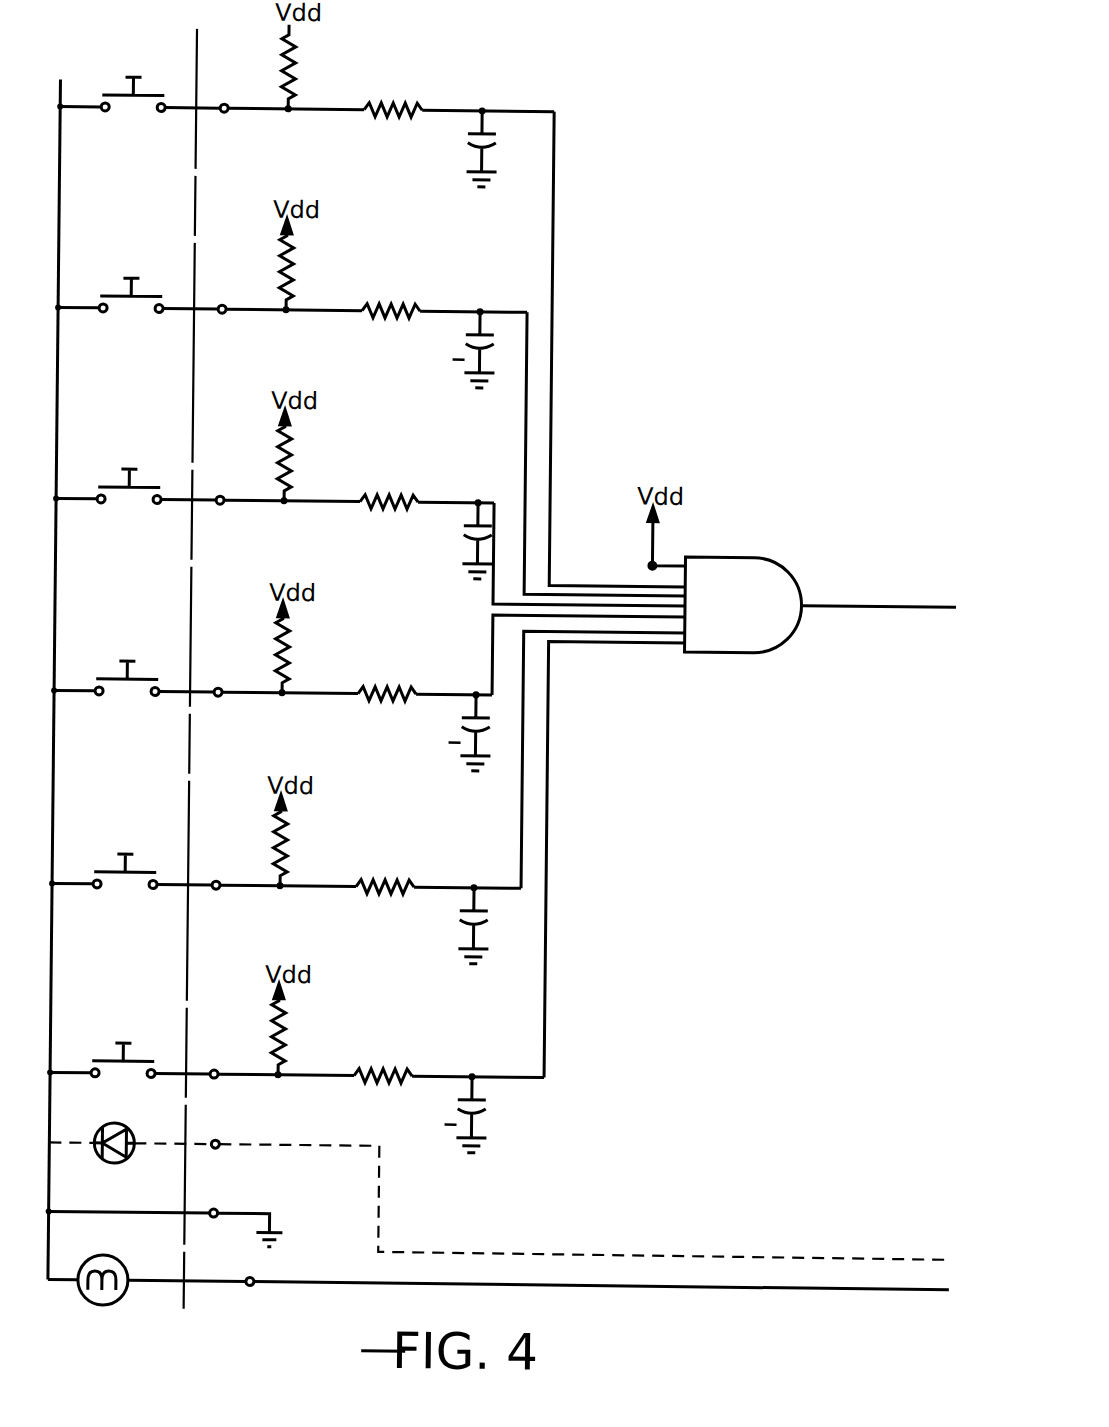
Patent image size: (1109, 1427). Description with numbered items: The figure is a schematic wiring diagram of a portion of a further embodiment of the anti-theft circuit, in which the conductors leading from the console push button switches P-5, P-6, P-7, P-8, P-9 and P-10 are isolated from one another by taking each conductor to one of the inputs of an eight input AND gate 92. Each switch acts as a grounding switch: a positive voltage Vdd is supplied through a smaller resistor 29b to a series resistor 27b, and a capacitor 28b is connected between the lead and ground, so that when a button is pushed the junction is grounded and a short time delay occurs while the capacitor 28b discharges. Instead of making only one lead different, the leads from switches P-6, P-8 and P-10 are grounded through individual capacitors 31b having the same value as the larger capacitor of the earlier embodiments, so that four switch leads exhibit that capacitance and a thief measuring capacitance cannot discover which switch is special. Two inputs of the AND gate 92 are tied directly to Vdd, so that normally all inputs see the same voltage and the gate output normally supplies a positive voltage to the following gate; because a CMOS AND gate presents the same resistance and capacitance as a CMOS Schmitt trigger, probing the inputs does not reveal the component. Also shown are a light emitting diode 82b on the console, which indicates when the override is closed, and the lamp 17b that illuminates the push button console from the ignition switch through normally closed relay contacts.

The push button switch P-5 is at (100, 96).
The push button switch P-6 is at (100, 297).
The push button switch P-7 is at (100, 488).
The push button switch P-8 is at (100, 680).
The push button switch P-9 is at (100, 873).
The push button switch P-10 is at (100, 1062).
The resistor 29b is at (281, 79).
The series resistor 27b is at (378, 107).
The capacitor 28b is at (466, 133).
The capacitor 31b is at (466, 334).
The eight input AND gate 92 is at (742, 619).
The light emitting diode 82b is at (121, 1108).
The lamp 17b is at (117, 1243).